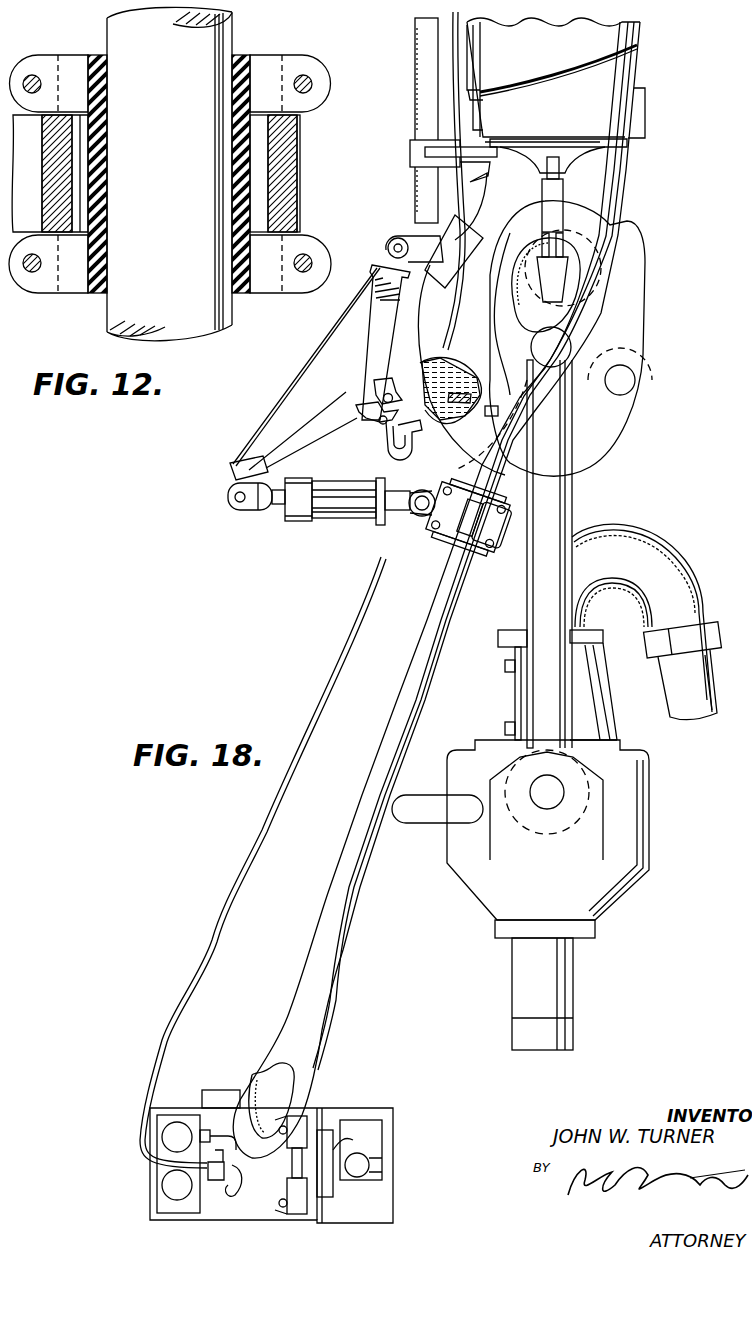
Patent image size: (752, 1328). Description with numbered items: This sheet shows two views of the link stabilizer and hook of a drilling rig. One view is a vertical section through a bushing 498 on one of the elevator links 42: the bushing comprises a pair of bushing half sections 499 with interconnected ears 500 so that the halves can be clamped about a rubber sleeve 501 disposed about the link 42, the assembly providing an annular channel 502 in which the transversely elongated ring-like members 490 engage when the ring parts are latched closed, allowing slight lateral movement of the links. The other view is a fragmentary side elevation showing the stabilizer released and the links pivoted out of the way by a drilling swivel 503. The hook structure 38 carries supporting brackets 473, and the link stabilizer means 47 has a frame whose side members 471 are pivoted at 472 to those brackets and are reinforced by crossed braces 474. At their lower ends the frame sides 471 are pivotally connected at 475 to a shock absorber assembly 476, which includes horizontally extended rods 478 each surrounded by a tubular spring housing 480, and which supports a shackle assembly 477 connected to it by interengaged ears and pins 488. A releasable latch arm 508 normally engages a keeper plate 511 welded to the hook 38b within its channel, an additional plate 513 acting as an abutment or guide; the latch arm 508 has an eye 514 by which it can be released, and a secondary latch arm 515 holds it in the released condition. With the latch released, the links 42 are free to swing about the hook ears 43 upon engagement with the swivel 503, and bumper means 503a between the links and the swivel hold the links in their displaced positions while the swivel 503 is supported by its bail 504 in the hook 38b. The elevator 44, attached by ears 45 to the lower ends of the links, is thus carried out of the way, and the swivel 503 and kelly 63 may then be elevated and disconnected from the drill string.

In FIG. 18, the hook structure 38 is at (656, 68).
In FIG. 18, the hook 38b is at (628, 168).
In FIG. 12, the elevator links 42 is at (106, 327).
In FIG. 18, the elevator links 42 is at (320, 873).
In FIG. 18, the ears 43 is at (565, 193).
In FIG. 18, the elevator 44 is at (145, 1195).
In FIG. 18, the ears 45 is at (287, 1182).
In FIG. 18, the link stabilizer means 47 is at (294, 385).
In FIG. 18, the swivel and kelly assembly 63 is at (578, 1021).
In FIG. 18, the side members 471 is at (275, 458).
In FIG. 18, the pivot 472 is at (397, 241).
In FIG. 18, the supporting brackets 473 is at (415, 236).
In FIG. 18, the crossed braces 474 is at (275, 428).
In FIG. 18, the pivotal connection 475 is at (230, 499).
In FIG. 18, the shock absorber assembly 476 is at (318, 518).
In FIG. 18, the shackle assembly 477 is at (428, 543).
In FIG. 18, the rods 478 is at (268, 510).
In FIG. 18, the tubular spring housing 480 is at (352, 518).
In FIG. 18, the pins 488 is at (412, 518).
In FIG. 12, the ring-like members 490 is at (296, 192).
In FIG. 12, the bushing 498 is at (62, 52).
In FIG. 18, the bushing 498 is at (480, 560).
In FIG. 12, the bushing half sections 499 is at (285, 62).
In FIG. 18, the bushing half sections 499 is at (460, 488).
In FIG. 12, the ears 500 is at (312, 66).
In FIG. 12, the rubber sleeve 501 is at (241, 293).
In FIG. 12, the annular channel 502 is at (300, 122).
In FIG. 18, the drilling swivel 503 is at (650, 797).
In FIG. 18, the bumper means 503a is at (420, 825).
In FIG. 18, the bail 504 is at (572, 505).
In FIG. 18, the latch arm 508 is at (408, 397).
In FIG. 18, the keeper plate 511 is at (461, 390).
In FIG. 18, the plate 513 is at (490, 406).
In FIG. 18, the eye 514 is at (390, 453).
In FIG. 18, the latch arm 515 is at (368, 413).